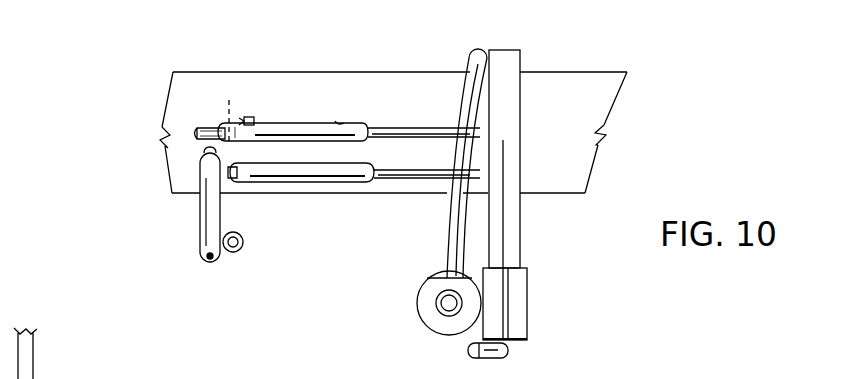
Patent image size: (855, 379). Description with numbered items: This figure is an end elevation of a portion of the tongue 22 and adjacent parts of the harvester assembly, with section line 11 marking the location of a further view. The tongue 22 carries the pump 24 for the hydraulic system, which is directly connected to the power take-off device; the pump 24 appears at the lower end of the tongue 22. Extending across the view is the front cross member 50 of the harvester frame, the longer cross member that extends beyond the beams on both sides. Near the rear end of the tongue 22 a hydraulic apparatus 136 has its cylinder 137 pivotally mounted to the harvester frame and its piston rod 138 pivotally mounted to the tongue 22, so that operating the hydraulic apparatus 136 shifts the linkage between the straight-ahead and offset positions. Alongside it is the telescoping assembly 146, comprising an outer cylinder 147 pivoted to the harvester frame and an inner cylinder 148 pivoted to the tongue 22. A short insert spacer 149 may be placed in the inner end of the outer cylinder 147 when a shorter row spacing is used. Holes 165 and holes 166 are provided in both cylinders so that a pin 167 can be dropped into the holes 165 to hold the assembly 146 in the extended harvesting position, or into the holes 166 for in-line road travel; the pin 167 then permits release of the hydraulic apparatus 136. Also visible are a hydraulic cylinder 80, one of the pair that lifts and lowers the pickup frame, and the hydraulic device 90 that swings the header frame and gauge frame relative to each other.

The section line 11- 11 is at (70, 44).
The tongue 22 is at (500, 60).
The pump 24 is at (426, 300).
The front cross member 50 is at (592, 116).
The hydraulic cylinders 80 is at (243, 241).
The hydraulic device 90 is at (200, 233).
The hydraulic apparatus 136 is at (340, 212).
The cylinder 137 is at (287, 180).
The piston rod 138 is at (398, 182).
The telescoping assembly 146 is at (344, 92).
The outer cylinder 147 is at (267, 125).
The inner cylinder 148 is at (433, 105).
The insert spacer 149 is at (211, 111).
The holes 165 is at (249, 118).
The holes 166 is at (338, 122).
The pin 167 is at (243, 118).